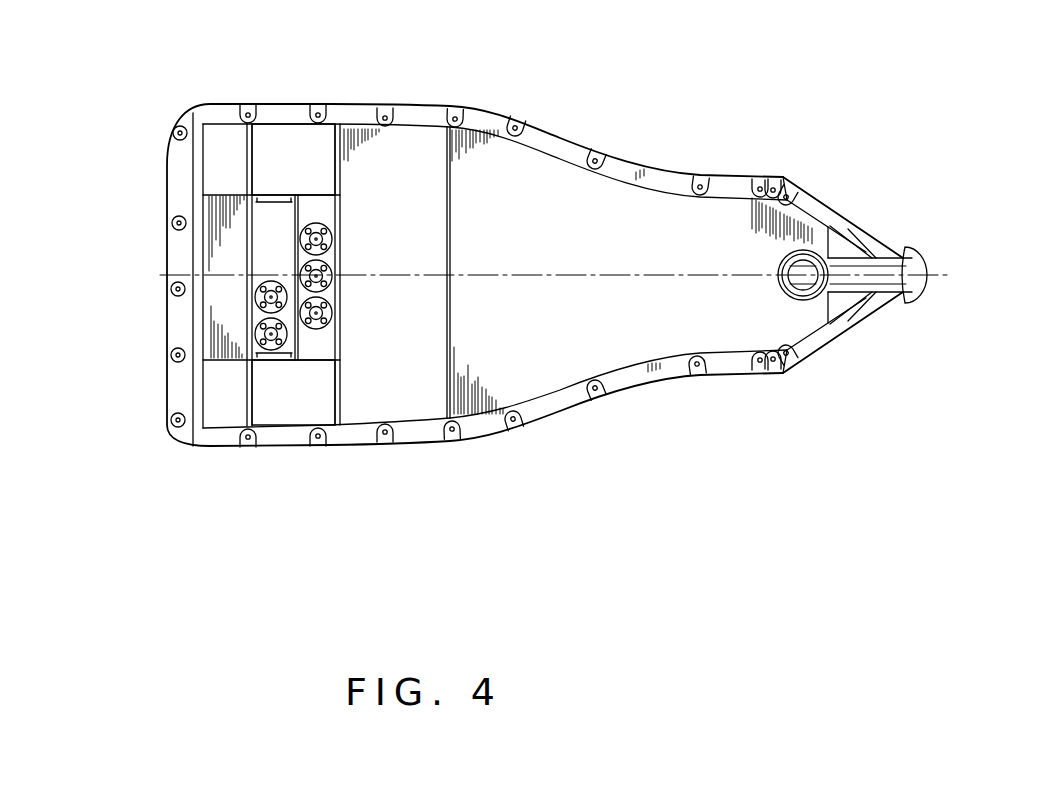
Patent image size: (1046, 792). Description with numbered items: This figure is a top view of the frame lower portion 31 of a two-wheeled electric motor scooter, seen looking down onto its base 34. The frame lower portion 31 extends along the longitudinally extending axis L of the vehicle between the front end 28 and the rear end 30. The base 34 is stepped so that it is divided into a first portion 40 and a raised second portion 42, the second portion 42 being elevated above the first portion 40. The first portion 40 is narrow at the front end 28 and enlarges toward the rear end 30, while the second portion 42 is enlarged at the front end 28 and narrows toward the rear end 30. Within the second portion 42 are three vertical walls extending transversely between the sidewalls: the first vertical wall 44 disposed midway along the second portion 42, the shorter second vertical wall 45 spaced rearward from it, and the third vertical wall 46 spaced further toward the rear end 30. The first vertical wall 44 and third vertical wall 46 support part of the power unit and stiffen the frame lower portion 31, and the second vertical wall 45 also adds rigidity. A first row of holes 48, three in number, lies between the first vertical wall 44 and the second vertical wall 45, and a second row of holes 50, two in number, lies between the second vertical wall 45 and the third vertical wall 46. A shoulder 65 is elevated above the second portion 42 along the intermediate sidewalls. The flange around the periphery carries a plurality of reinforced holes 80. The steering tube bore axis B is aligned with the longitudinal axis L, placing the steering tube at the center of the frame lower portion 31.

The front end 28 is at (858, 213).
The rear end 30 is at (157, 252).
The frame lower portion 31 is at (213, 448).
The base 34 is at (522, 172).
The first portion 40 is at (632, 272).
The second portion 42 is at (397, 272).
The first vertical wall 44 is at (337, 335).
The second vertical wall 45 is at (300, 293).
The third vertical wall 46 is at (250, 179).
The first row of holes 48 is at (325, 210).
The second row of holes 50 is at (273, 276).
The shoulder 65 is at (323, 145).
The holes 80 is at (168, 420).
The axis B is at (880, 280).
The longitudinal axis L is at (662, 280).